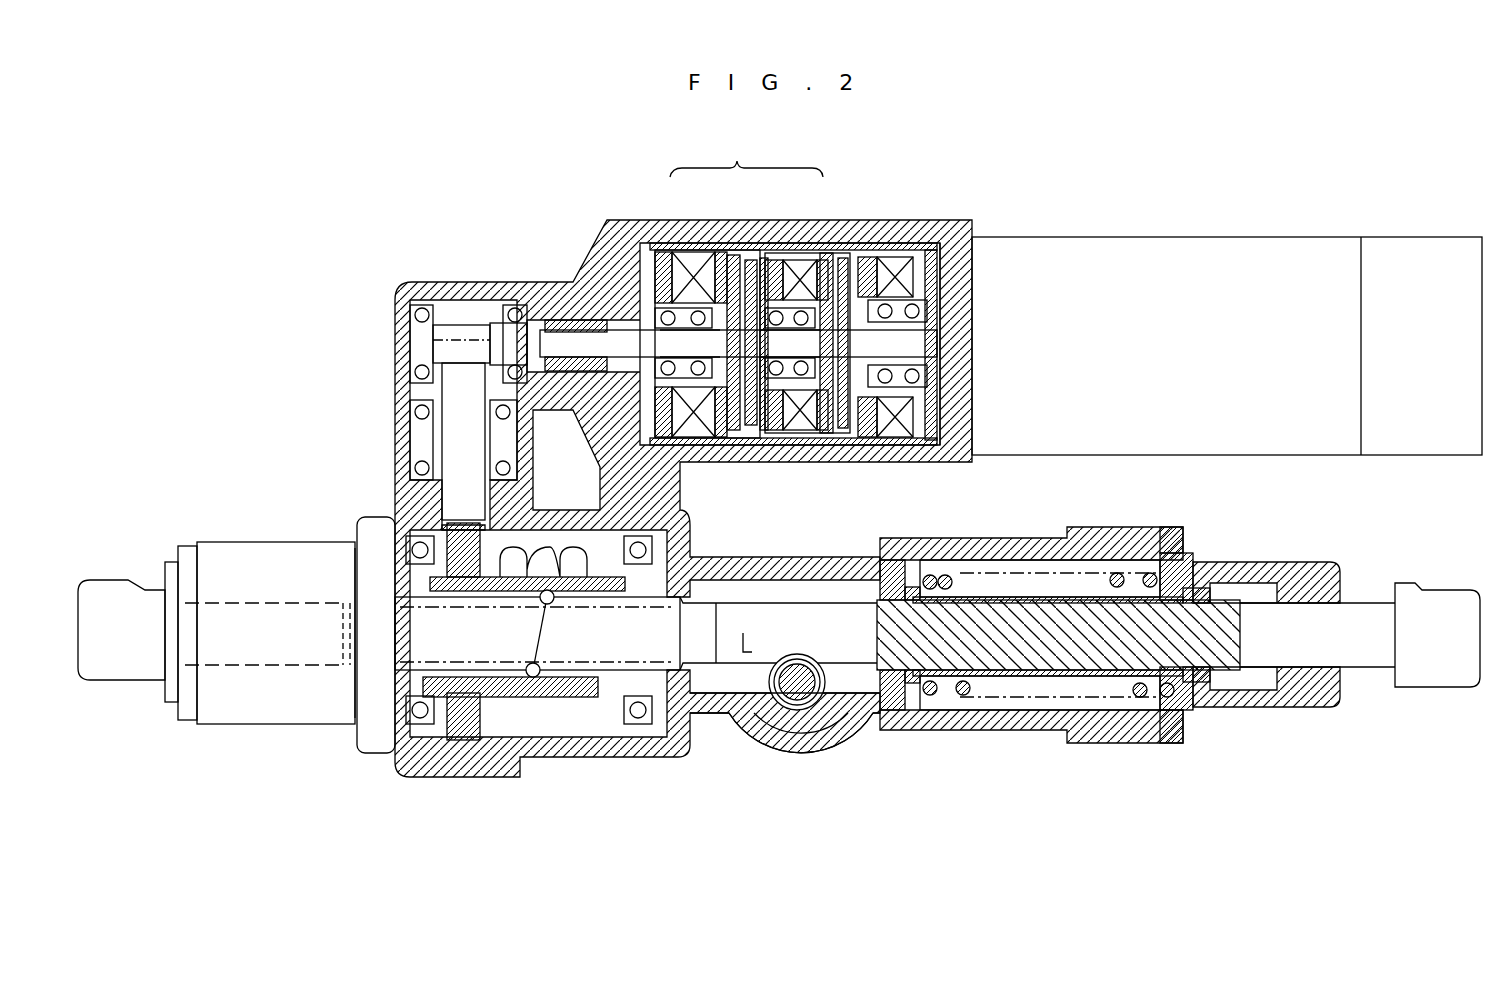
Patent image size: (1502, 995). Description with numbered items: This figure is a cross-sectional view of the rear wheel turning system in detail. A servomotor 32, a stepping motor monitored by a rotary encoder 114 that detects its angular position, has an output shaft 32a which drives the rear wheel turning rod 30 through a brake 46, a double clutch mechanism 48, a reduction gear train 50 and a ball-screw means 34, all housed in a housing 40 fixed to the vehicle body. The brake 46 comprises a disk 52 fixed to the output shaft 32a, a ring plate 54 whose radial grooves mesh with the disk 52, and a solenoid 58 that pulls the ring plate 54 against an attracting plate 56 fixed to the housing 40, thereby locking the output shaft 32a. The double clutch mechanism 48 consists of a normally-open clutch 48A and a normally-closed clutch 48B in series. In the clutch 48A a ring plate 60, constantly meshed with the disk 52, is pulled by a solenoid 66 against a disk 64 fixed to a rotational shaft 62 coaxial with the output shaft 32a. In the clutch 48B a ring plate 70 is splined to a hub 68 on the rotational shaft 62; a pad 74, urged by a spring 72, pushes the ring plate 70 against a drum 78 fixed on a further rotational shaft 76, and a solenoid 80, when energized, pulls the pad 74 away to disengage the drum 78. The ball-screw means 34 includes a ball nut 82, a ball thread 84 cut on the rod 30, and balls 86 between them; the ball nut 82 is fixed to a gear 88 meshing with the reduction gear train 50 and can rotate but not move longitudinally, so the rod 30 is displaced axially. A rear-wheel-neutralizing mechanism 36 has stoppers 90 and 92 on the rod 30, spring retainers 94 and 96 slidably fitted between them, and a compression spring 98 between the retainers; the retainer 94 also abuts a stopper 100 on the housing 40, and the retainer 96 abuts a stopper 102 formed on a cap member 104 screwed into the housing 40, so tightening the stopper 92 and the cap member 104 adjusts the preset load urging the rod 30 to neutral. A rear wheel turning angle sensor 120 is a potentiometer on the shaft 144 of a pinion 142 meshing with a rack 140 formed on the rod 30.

The rear wheel turning rod 30 is at (1368, 603).
The servomotor 32 is at (1215, 237).
The output shaft 32a is at (905, 359).
The ball-screw means 34 is at (565, 700).
The rear-wheel-neutralizing mechanism 36 is at (990, 712).
The housing 40 is at (597, 248).
The brake 46 is at (903, 237).
The double clutch mechanism 48 is at (746, 156).
The normally-open type electro-magnetic clutch 48A is at (793, 237).
The normally-closed type electro-magnetic clutch 48B is at (690, 245).
The reduction gear train 50 is at (418, 342).
The disk 52 is at (878, 440).
The ring plate 54 is at (905, 440).
The attracting plate 56 is at (935, 440).
The solenoid 58 is at (965, 405).
The ring plate 60 is at (845, 440).
The rotational shaft 62 is at (768, 359).
The disk 64 is at (830, 440).
The solenoid 66 is at (800, 440).
The hub 68 is at (770, 440).
The ring plate 70 is at (750, 440).
The spring 72 is at (690, 345).
The pad 74 is at (730, 440).
The rotational shaft 76 is at (628, 359).
The drum 78 is at (690, 440).
The solenoid 80 is at (668, 440).
The ball nut 82 is at (640, 722).
The ball thread 84 is at (702, 722).
The balls 86 is at (525, 690).
The gear 88 is at (462, 745).
The stopper 90 is at (888, 718).
The stopper 92 is at (1200, 706).
The spring retainer 94 is at (930, 720).
The spring retainer 96 is at (1160, 722).
The compression spring 98 is at (1118, 722).
The stopper 100 is at (925, 560).
The stopper 102 is at (1160, 540).
The cap member 104 is at (1270, 565).
The rotary encoder 114 is at (1428, 240).
The rear wheel turning angle sensor 120 is at (833, 756).
The rack 140 is at (740, 633).
The pinion 142 is at (838, 668).
The shaft 144 is at (790, 668).